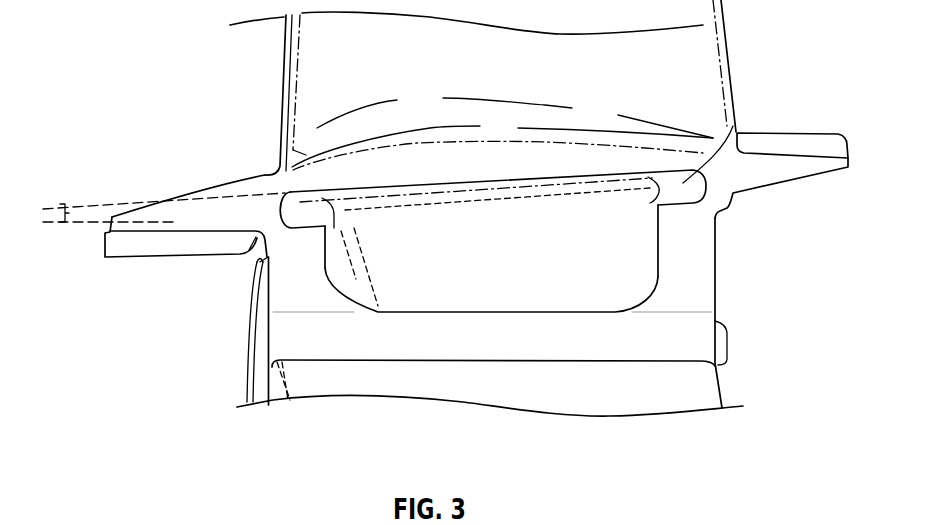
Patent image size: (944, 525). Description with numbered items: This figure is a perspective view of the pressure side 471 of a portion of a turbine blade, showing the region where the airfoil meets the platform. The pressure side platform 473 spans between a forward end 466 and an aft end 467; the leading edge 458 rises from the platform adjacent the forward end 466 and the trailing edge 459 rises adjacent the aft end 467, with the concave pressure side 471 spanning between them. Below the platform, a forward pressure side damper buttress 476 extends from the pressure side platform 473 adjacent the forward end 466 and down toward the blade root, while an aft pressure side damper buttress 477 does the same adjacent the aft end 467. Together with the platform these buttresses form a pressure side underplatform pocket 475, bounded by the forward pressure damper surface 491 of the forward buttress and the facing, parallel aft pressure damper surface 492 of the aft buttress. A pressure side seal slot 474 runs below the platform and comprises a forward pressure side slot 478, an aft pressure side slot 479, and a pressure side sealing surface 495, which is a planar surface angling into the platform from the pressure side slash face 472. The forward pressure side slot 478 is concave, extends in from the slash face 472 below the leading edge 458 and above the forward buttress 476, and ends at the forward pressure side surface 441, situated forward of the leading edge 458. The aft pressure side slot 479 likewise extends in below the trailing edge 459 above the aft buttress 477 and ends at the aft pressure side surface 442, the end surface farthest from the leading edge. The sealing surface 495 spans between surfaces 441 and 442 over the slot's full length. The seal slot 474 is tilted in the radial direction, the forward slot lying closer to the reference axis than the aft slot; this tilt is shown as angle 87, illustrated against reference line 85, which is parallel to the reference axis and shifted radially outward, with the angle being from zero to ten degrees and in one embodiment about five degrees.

The reference line 85 is at (90, 226).
The angle 87 is at (68, 212).
The forward pressure side surface 441 is at (290, 208).
The aft pressure side surface 442 is at (693, 186).
The leading edge 458 is at (280, 107).
The trailing edge 459 is at (733, 67).
The forward end 466 is at (108, 237).
The aft end 467 is at (850, 168).
The pressure side 471 is at (314, 78).
The pressure side slash face 472 is at (182, 209).
The pressure side platform 473 is at (123, 187).
The pressure side seal slot 474 is at (437, 183).
The pressure side underplatform pocket 475 is at (506, 301).
The forward pressure side damper buttress 476 is at (302, 247).
The aft pressure side damper buttress 477 is at (693, 246).
The forward pressure side slot 478 is at (285, 193).
The aft pressure side slot 479 is at (738, 132).
The forward pressure damper surface 491 is at (334, 248).
The aft pressure damper surface 492 is at (650, 240).
The pressure side sealing surface 495 is at (493, 192).